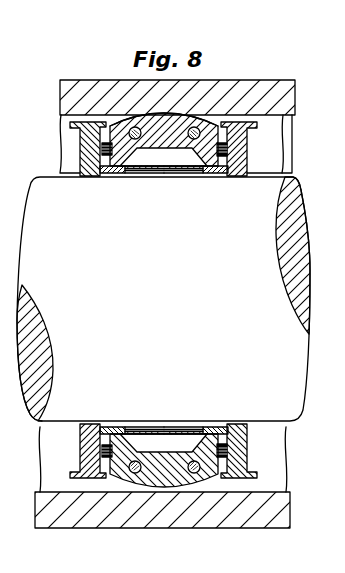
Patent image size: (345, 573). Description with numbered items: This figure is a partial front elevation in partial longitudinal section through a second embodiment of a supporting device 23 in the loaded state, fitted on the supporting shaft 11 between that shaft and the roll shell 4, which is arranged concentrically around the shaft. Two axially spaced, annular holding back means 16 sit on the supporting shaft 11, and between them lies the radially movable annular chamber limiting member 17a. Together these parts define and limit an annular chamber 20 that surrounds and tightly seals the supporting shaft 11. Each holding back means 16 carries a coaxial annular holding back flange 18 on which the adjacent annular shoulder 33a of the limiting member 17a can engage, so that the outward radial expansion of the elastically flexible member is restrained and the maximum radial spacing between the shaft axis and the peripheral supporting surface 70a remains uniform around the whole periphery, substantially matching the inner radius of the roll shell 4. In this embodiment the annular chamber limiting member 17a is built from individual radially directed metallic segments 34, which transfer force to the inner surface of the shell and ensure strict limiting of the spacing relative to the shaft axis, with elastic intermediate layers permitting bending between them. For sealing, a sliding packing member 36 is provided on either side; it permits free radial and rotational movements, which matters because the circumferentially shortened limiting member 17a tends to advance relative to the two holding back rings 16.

The roll shell 4 is at (233, 80).
The supporting shaft 11 is at (268, 188).
The holding back means 16 is at (88, 148).
The annular chamber limiting member 17a is at (165, 130).
The holding back flange 18 is at (102, 122).
The annular chamber 20 is at (157, 158).
The supporting device 23 is at (117, 176).
The annular shoulder 33a is at (228, 147).
The metallic segment 34 is at (203, 176).
The sliding packing member 36 is at (248, 156).
The peripheral supporting surface 70a is at (155, 111).